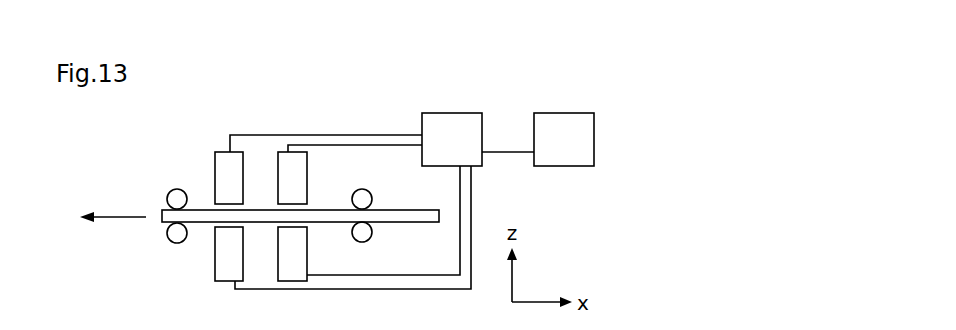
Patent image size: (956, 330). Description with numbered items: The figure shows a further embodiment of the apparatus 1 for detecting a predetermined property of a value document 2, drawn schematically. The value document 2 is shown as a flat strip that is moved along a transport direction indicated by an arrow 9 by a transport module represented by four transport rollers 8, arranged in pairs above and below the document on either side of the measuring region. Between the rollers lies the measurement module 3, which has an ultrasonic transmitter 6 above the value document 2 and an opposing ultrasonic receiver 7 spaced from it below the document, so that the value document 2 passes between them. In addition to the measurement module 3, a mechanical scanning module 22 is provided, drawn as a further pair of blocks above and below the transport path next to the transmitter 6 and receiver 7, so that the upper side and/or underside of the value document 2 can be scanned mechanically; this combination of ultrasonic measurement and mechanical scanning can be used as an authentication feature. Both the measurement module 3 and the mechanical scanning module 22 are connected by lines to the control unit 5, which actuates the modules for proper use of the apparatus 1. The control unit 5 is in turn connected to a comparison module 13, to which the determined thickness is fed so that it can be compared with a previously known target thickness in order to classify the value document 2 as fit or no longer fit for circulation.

The apparatus 1 is at (433, 104).
The value document 2 is at (325, 209).
The measurement module 3 is at (222, 150).
The control unit 5 is at (457, 113).
The ultrasonic transmitter 6 is at (229, 178).
The ultrasonic receiver 7 is at (229, 254).
The transport rollers 8 is at (183, 190).
The arrow 9 is at (104, 216).
The comparison module 13 is at (552, 113).
The mechanical scanning module 22 is at (278, 150).